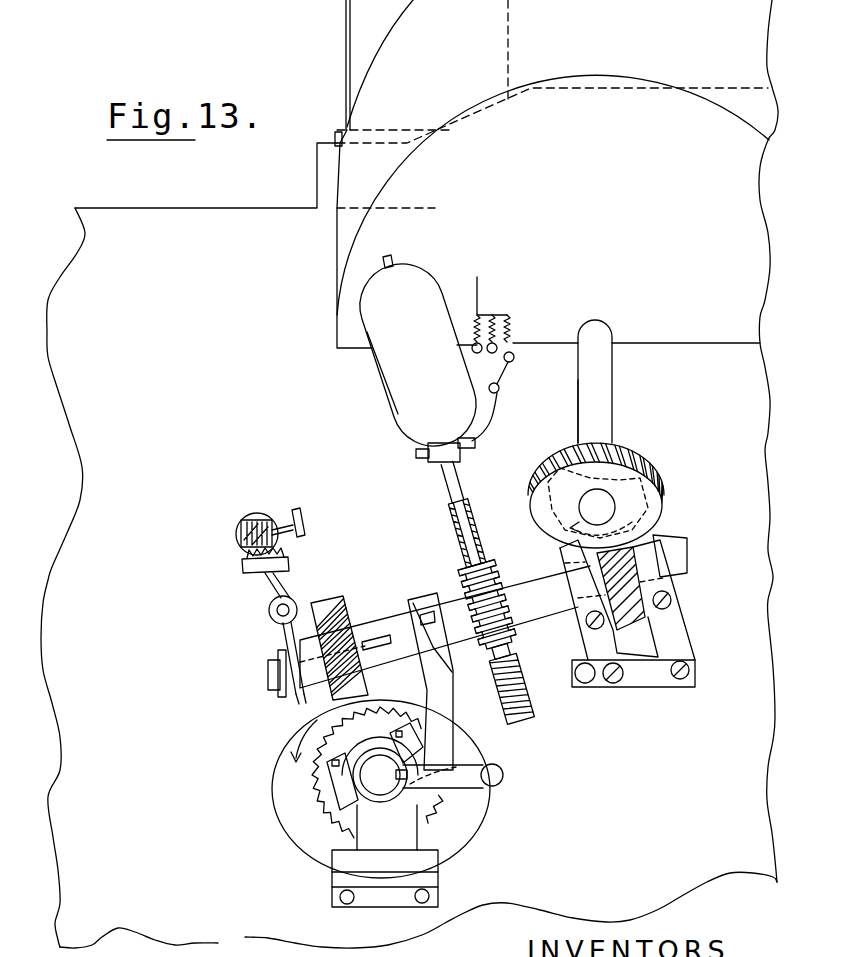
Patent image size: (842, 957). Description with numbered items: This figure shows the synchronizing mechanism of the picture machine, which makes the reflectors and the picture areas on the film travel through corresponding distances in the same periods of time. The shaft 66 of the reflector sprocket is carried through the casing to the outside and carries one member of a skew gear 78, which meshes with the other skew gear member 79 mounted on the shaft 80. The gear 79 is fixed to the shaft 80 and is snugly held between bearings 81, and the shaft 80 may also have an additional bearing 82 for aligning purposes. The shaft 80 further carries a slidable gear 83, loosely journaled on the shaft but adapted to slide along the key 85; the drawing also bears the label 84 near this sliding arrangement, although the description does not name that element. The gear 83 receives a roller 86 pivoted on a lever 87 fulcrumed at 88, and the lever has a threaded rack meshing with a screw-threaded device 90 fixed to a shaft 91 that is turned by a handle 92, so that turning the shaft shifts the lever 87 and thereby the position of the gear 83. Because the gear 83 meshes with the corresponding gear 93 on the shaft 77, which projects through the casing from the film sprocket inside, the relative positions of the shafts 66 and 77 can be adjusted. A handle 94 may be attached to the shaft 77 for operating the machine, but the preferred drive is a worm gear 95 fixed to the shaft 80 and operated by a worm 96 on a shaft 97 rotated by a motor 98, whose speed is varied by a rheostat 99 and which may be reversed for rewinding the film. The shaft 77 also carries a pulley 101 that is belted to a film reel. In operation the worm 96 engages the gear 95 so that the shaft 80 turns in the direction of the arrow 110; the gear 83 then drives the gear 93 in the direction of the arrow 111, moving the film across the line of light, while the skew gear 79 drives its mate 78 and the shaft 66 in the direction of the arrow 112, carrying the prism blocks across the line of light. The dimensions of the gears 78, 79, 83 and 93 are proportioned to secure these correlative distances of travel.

The shaft 66 is at (597, 350).
The shaft 77 is at (372, 781).
The skew gear member 78 is at (620, 458).
The skew gear member 79 is at (652, 565).
The shaft 80 is at (668, 541).
The bearings 81 is at (668, 582).
The additional bearing 82 is at (417, 603).
The slidable gear 83 is at (325, 601).
The bar 84 is at (366, 641).
The key 85 is at (287, 708).
The roller 86 is at (270, 678).
The lever 87 is at (282, 637).
The fulcrum 88 is at (274, 618).
The screw-threaded device 90 is at (254, 518).
The shaft 91 is at (284, 519).
The handle 92 is at (307, 521).
The gear 93 is at (313, 771).
The handle 94 is at (488, 767).
The worm gear 95 is at (515, 660).
The worm 96 is at (510, 630).
The shaft 97 is at (441, 469).
The motor 98 is at (400, 373).
The rheostat 99 is at (502, 359).
The pulley 101 is at (312, 836).
The arrow 110 is at (598, 503).
The arrow 111 is at (307, 733).
The arrow 112 is at (589, 379).